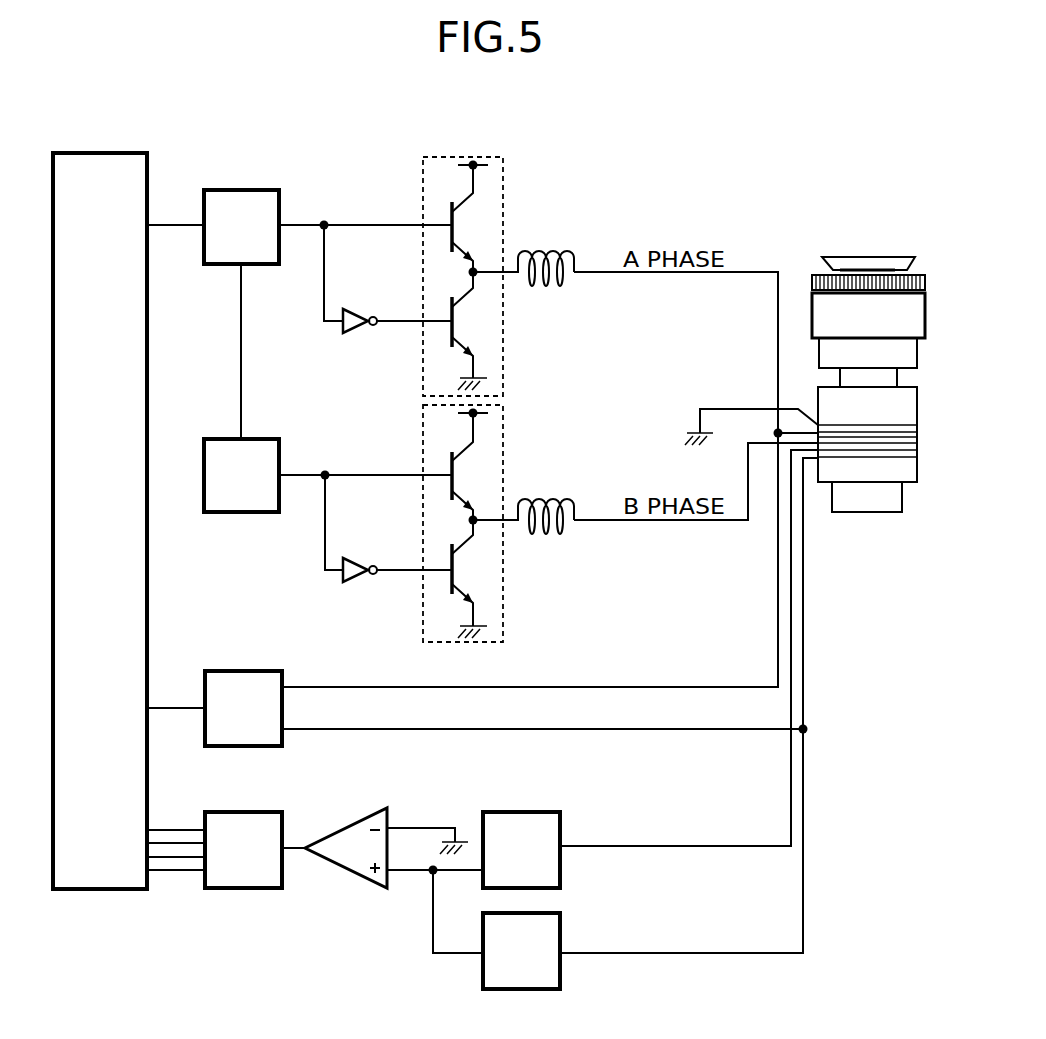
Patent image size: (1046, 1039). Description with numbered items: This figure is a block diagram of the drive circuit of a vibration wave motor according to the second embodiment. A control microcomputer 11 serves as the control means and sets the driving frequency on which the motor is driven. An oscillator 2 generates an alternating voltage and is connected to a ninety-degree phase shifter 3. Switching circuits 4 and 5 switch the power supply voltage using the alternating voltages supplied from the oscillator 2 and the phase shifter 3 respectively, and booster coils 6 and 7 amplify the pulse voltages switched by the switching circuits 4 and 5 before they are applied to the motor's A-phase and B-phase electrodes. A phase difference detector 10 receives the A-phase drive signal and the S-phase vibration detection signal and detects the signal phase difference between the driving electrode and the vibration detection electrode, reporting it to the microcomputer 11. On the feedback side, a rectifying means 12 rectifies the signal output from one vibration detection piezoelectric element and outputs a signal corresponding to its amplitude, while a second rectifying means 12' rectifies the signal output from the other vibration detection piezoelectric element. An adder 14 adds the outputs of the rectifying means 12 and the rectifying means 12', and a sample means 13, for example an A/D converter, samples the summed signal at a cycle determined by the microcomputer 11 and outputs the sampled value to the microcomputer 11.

The control microcomputer 11 is at (100, 152).
The oscillator 2 is at (240, 189).
The 90° phase shifter 3 is at (252, 438).
The switching circuit 4 is at (503, 187).
The switching circuit 5 is at (503, 433).
The booster coil 6 is at (570, 250).
The booster coil 7 is at (570, 498).
The phase difference detector 10 is at (243, 670).
The sample means 13 is at (240, 811).
The adder 14 is at (357, 820).
The rectifying means 12 is at (554, 831).
The rectifying means 12' is at (532, 929).